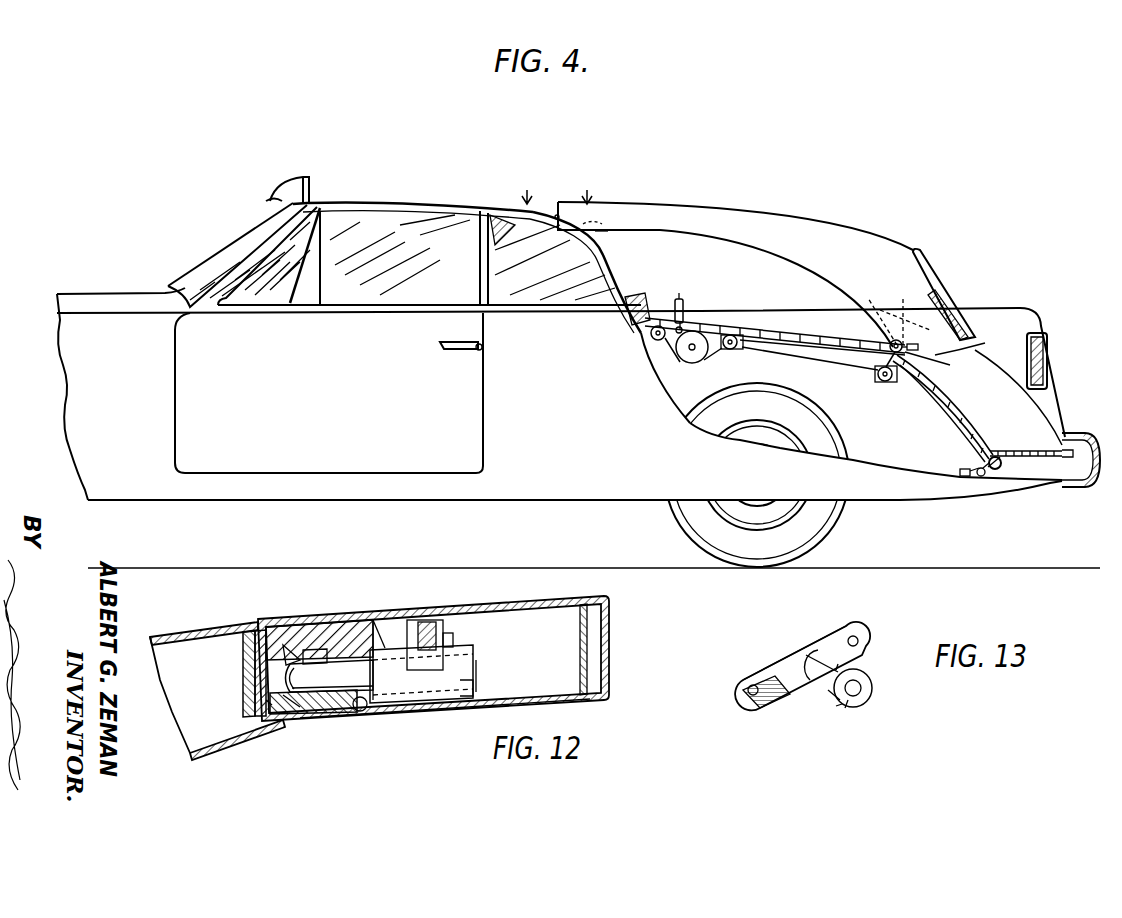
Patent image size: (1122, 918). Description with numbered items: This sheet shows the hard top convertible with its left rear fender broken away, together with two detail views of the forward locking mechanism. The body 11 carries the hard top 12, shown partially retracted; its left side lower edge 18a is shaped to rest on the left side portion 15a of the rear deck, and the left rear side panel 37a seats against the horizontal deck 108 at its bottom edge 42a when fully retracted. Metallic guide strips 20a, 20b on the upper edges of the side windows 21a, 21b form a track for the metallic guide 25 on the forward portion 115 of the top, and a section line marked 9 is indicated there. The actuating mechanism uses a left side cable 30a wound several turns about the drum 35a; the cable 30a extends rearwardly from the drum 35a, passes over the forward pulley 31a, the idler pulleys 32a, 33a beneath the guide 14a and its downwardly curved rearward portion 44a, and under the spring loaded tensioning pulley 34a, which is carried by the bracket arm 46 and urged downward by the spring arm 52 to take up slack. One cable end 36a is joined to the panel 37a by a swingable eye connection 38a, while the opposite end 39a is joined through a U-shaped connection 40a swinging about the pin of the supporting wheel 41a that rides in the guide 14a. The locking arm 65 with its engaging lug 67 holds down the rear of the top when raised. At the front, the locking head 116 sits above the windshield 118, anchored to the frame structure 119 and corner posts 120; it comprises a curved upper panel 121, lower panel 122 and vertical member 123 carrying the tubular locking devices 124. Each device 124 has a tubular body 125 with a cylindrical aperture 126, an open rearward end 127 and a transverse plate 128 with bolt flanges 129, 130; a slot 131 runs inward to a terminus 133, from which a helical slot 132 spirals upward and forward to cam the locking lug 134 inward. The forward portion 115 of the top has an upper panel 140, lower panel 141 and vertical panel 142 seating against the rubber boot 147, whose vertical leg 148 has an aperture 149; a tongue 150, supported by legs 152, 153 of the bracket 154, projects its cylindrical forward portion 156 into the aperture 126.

In FIG. 4, the body 11 is at (551, 434).
In FIG. 4, the hard top 12 is at (828, 227).
In FIG. 4, the section line 9 is at (555, 185).
In FIG. 4, the left side guide 14a is at (750, 327).
In FIG. 4, the left side portion of rear deck 15a is at (813, 339).
In FIG. 4, the left side lower edge of hard top 18a is at (742, 244).
In FIG. 4, the metallic guide strip 20a is at (372, 200).
In FIG. 4, the metallic guide strip 20b is at (598, 254).
In FIG. 4, the front left side window 21a is at (396, 266).
In FIG. 4, the rear left side window 21b is at (600, 304).
In FIG. 4, the metallic guide 25 is at (604, 232).
In FIG. 4, the left side cable 30a is at (947, 427).
In FIG. 4, the forward pulley 31a is at (650, 334).
In FIG. 4, the idler pulley 32a is at (731, 350).
In FIG. 4, the idler pulley 33a is at (880, 380).
In FIG. 4, the spring loaded tensioning pulley 34a is at (998, 469).
In FIG. 4, the left side drum 35a is at (692, 352).
In FIG. 4, the cable end 36a is at (911, 318).
In FIG. 4, the left rear side panel 37a is at (920, 285).
In FIG. 4, the swingable connection 38a is at (913, 343).
In FIG. 4, the cable end 39a is at (912, 368).
In FIG. 4, the swingable connection 40a is at (940, 361).
In FIG. 4, the left supporting wheel 41a is at (895, 313).
In FIG. 4, the bottom edge of side panel 42a is at (975, 348).
In FIG. 4, the downwardly curved rearward portion of channel 44a is at (862, 354).
In FIG. 4, the bracket arm 46 is at (981, 477).
In FIG. 4, the spring arm 52 is at (958, 471).
In FIG. 4, the locking arm 65 is at (684, 312).
In FIG. 4, the engaging lug 67 is at (679, 298).
In FIG. 4, the horizontal deck 108 is at (1027, 449).
In FIG. 4, the forward portion of hard top 115 is at (590, 218).
In FIG. 12, the forward portion of hard top 115 is at (506, 595).
In FIG. 4, the locking head 116 is at (292, 172).
In FIG. 12, the locking head 116 is at (280, 748).
In FIG. 4, the front windshield 118 is at (212, 252).
In FIG. 4, the frame structure 119 is at (270, 199).
In FIG. 4, the corner posts 120 is at (267, 240).
In FIG. 12, the upper panel 121 is at (208, 625).
In FIG. 12, the lower panel 122 is at (240, 732).
In FIG. 12, the vertical member 123 is at (250, 656).
In FIG. 12, the tubular locking device 124 is at (268, 718).
In FIG. 13, the tubular locking device 124 is at (722, 699).
In FIG. 12, the tubular body 125 is at (325, 712).
In FIG. 13, the tubular body 125 is at (860, 664).
In FIG. 12, the cylindrical aperture 126 is at (285, 688).
In FIG. 13, the cylindrical aperture 126 is at (860, 694).
In FIG. 13, the rearward facing end 127 is at (872, 688).
In FIG. 12, the transverse plate 128 is at (262, 681).
In FIG. 13, the transverse plate 128 is at (772, 666).
In FIG. 13, the flange 129 is at (756, 697).
In FIG. 13, the flange 130 is at (846, 628).
In FIG. 12, the slot 131 is at (300, 640).
In FIG. 13, the slot 131 is at (846, 704).
In FIG. 13, the helical slot 132 is at (812, 650).
In FIG. 13, the inward terminus of slot 133 is at (830, 700).
In FIG. 12, the locking lug 134 is at (336, 640).
In FIG. 12, the upper panel 140 is at (495, 609).
In FIG. 12, the lower panel 141 is at (533, 678).
In FIG. 12, the vertical panel 142 is at (398, 616).
In FIG. 12, the rubber boot 147 is at (372, 625).
In FIG. 12, the vertical leg of boot 148 is at (413, 645).
In FIG. 12, the aperture 149 is at (364, 708).
In FIG. 12, the tongue 150 is at (296, 656).
In FIG. 12, the bracket leg 152 is at (374, 678).
In FIG. 12, the bracket leg 153 is at (478, 655).
In FIG. 12, the bracket 154 is at (427, 706).
In FIG. 12, the cylindrical forward portion of tongue 156 is at (321, 677).